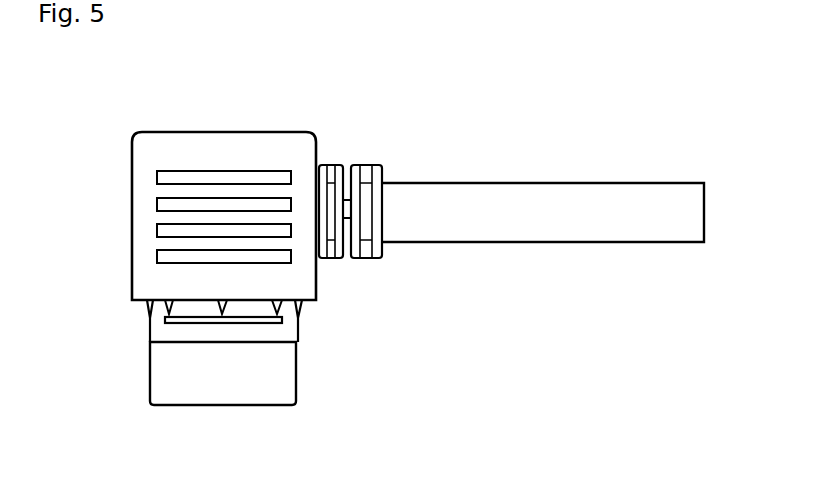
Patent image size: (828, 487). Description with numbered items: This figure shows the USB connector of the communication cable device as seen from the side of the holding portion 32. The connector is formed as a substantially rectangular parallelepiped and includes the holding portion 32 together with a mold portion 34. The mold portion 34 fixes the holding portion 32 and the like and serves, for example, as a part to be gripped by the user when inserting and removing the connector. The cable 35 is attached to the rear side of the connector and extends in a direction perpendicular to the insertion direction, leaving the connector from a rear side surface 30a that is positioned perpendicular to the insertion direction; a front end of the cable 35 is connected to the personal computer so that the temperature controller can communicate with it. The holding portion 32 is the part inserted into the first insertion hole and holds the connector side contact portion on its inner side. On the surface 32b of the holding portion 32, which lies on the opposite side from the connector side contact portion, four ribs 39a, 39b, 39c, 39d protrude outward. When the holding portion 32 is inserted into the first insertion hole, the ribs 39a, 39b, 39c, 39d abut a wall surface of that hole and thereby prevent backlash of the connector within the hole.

The mold portion 34 is at (222, 157).
The rear side surface 30a is at (316, 285).
The cable 35 is at (529, 208).
The rib 39a is at (158, 308).
The rib 39b is at (221, 306).
The rib 39c is at (283, 310).
The rib 39d is at (188, 322).
The holding portion 32 is at (223, 404).
The surface of the holding portion 32b is at (232, 390).